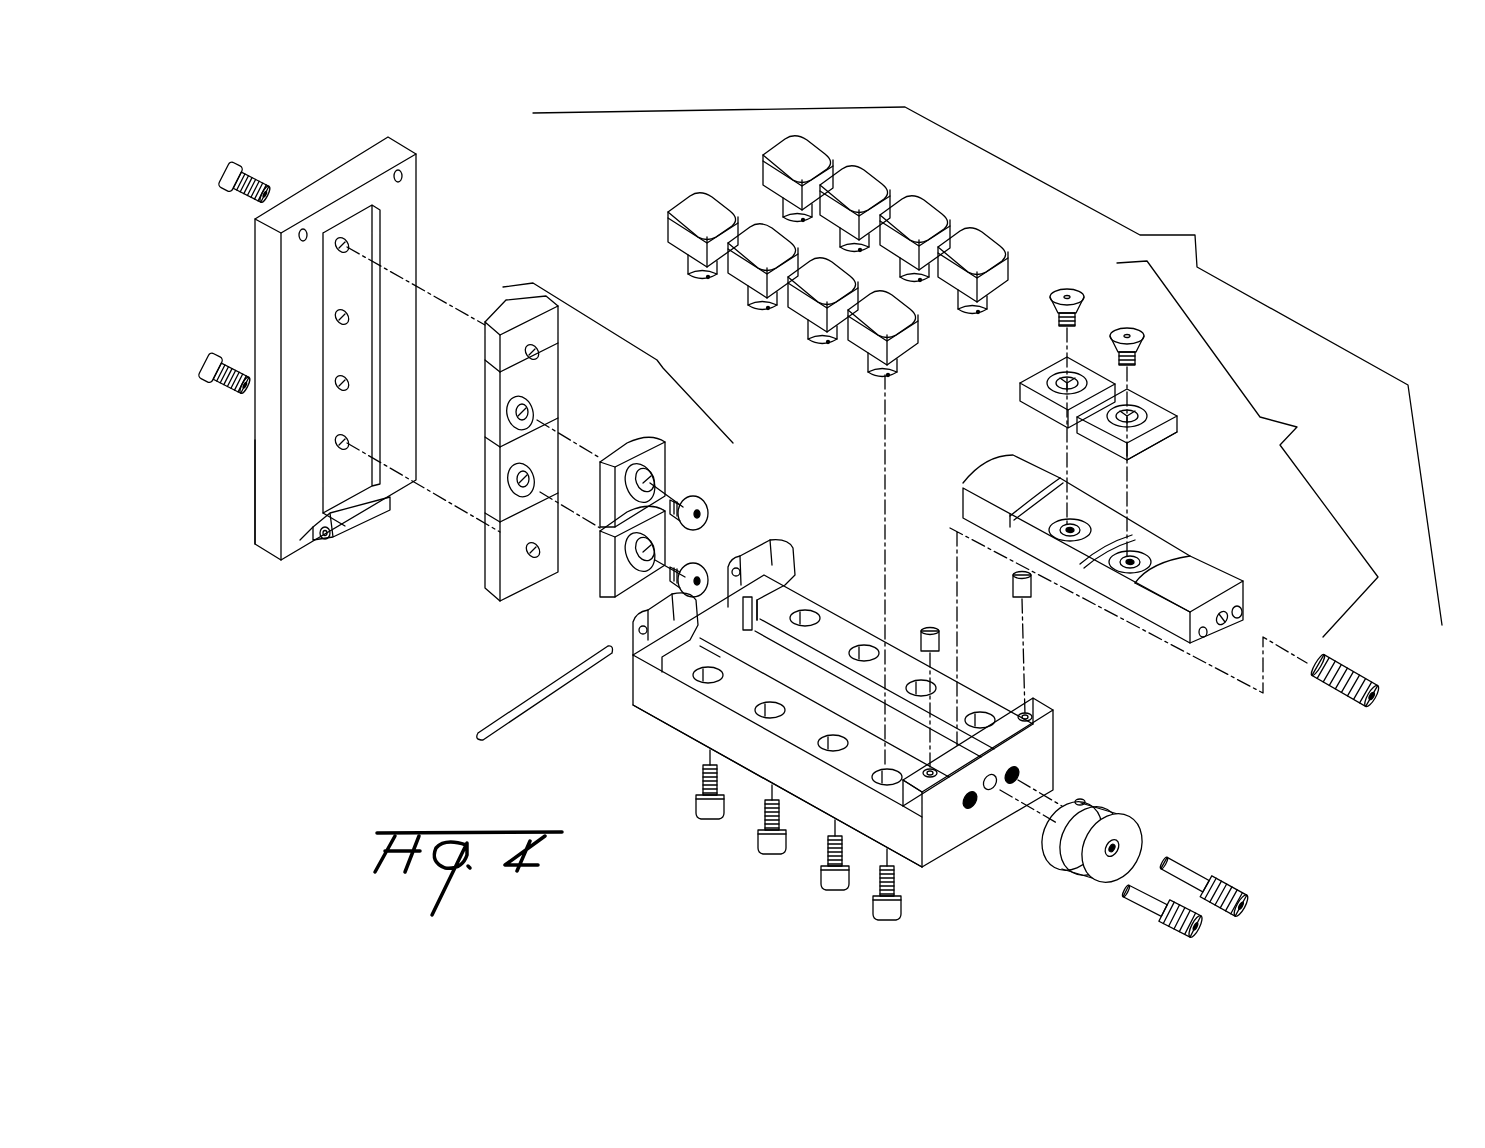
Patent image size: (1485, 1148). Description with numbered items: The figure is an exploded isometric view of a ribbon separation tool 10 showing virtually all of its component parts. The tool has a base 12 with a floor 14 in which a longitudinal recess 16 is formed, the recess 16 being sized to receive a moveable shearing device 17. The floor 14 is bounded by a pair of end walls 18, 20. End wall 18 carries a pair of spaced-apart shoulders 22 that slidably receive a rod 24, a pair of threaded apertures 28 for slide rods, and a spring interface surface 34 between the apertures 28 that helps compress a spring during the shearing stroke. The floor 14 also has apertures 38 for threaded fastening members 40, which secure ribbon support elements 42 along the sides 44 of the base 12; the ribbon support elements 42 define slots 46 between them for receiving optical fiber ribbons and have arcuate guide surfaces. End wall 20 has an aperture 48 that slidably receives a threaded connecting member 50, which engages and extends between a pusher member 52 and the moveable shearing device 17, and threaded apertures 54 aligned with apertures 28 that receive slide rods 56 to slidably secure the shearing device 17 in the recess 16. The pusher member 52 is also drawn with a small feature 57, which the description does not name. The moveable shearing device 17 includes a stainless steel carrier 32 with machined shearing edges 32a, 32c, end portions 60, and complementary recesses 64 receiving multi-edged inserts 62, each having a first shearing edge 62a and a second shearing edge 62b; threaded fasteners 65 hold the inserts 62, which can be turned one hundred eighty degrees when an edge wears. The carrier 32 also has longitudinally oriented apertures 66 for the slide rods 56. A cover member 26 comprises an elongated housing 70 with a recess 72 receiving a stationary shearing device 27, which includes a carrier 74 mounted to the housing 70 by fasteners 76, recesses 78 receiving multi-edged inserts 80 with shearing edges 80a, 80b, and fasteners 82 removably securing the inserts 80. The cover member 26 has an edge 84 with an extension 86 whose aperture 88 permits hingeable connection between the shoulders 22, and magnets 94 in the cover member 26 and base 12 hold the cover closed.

The ribbon separation tool 10 is at (987, 366).
The base 12 is at (850, 722).
The floor 14 is at (845, 630).
The longitudinal recess 16 is at (903, 725).
The moveable shearing device 17 is at (1247, 449).
The end wall 18 is at (736, 545).
The end wall 20 is at (1047, 745).
The shoulders 22 is at (650, 605).
The rod 24 is at (518, 712).
The cover member 26 is at (354, 414).
The stationary shearing device 27 is at (659, 348).
The threaded apertures 28 is at (692, 721).
The carrier 32 is at (1123, 528).
The shearing edge 32a is at (1193, 566).
The shearing edge 32c is at (1020, 460).
The spring interface surface 34 is at (653, 677).
The apertures 38 is at (930, 686).
The threaded fastening members 40 is at (902, 908).
The ribbon support elements 42 is at (838, 452).
The sides 44 is at (770, 763).
The slots 46 is at (905, 198).
The aperture 48 is at (1000, 766).
The threaded connecting member 50 is at (1340, 668).
The pusher member 52 is at (1122, 824).
The threaded apertures 54 is at (1018, 782).
The slide rods 56 is at (1190, 872).
The hole 57 is at (1087, 798).
The end portions 60 is at (1123, 527).
The multi-edged inserts 62 is at (1123, 394).
The first shearing edge 62a is at (1163, 433).
The second shearing edge 62b is at (1065, 383).
The complementary recesses 64 is at (1127, 568).
The threaded fasteners 65 is at (1121, 326).
The longitudinally oriented apertures 66 is at (1244, 610).
The elongated housing 70 is at (253, 442).
The recess 72 is at (343, 537).
The carrier 74 is at (527, 448).
The fasteners 76 is at (258, 171).
The recesses 78 is at (488, 425).
The multi-edged inserts 80 is at (631, 495).
The shearing edge 80a is at (627, 450).
The shearing edge 80b is at (610, 548).
The fasteners 82 is at (703, 498).
The edge 84 is at (297, 547).
The extension 86 is at (370, 527).
The aperture 88 is at (320, 543).
The magnets 94 is at (403, 173).